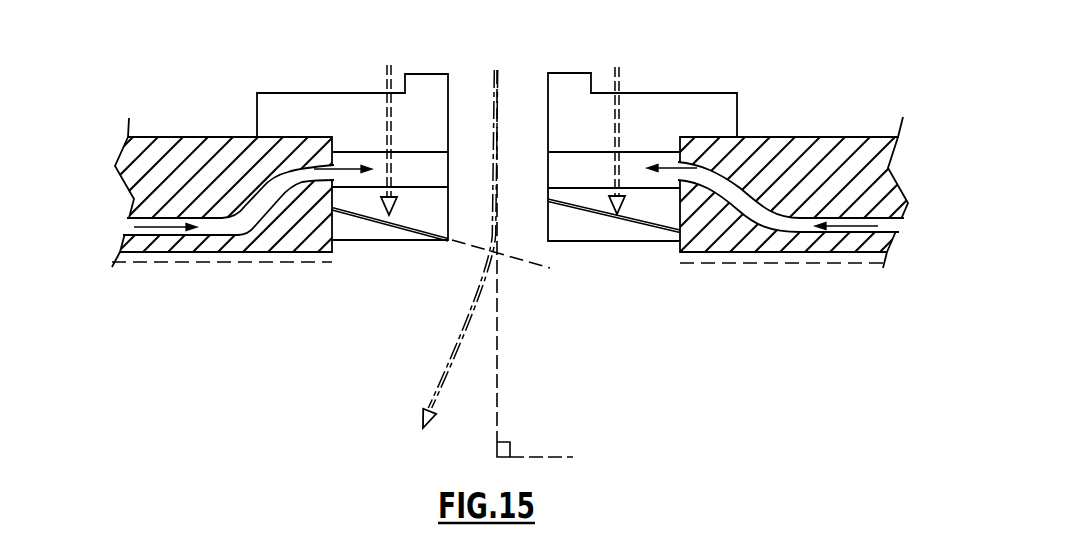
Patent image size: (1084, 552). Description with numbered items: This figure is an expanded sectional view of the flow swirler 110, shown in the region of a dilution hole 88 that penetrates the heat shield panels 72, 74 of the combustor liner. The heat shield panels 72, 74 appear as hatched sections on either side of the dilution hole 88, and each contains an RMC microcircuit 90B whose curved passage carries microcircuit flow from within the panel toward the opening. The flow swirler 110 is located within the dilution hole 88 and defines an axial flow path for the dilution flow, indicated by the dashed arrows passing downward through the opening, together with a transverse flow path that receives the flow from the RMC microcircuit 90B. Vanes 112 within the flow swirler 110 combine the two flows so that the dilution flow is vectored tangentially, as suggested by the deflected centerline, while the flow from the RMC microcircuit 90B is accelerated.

The dilution hole 88 is at (642, 120).
The flow swirler 110 is at (667, 108).
The heat shield panel 72 is at (787, 178).
The heat shield panel 74 is at (815, 160).
The RMC microcircuit 90B is at (232, 220).
The vanes 112 is at (417, 213).